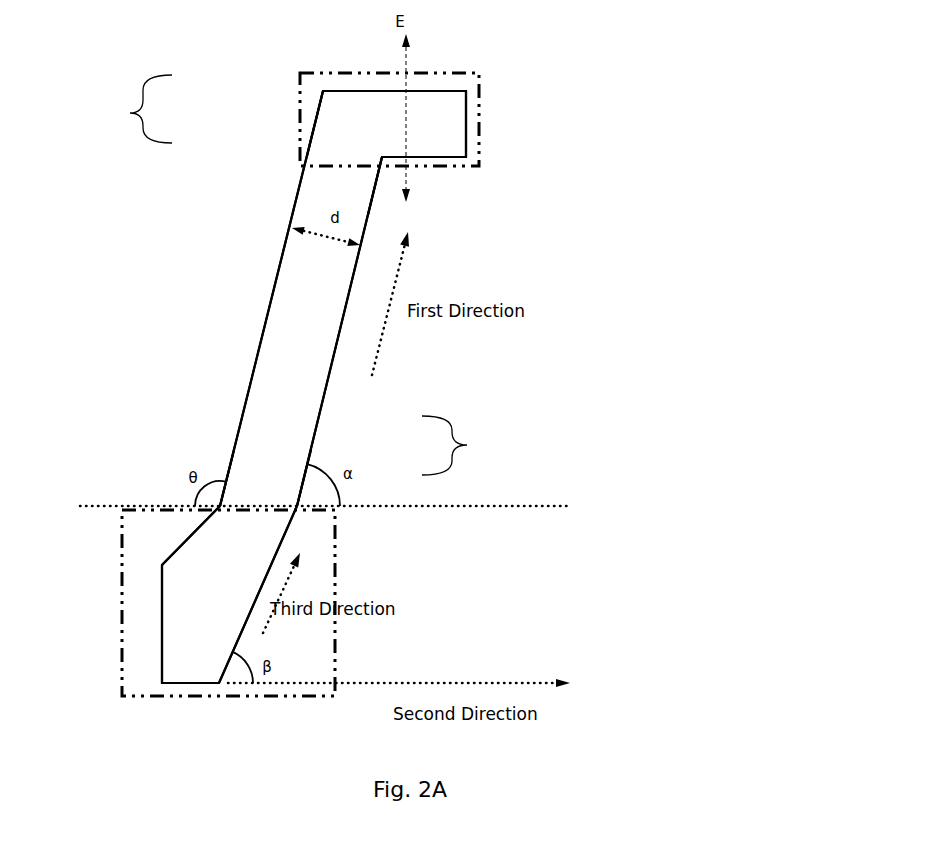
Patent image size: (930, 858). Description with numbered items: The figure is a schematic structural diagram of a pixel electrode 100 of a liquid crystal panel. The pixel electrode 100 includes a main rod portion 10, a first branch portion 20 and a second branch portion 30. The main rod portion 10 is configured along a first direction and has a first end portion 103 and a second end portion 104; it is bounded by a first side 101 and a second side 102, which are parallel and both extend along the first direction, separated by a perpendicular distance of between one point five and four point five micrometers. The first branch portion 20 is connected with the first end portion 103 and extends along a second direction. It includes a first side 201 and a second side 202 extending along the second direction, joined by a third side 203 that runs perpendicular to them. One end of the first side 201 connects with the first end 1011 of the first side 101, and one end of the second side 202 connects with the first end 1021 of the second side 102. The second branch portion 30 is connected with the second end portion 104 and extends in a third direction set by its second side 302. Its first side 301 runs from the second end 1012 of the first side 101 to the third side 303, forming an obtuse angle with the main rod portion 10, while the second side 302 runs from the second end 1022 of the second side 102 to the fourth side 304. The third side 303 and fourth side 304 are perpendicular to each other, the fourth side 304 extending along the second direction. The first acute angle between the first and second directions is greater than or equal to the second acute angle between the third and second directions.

The pixel electrode 100 is at (675, 38).
The main rod portion 10 is at (142, 252).
The first branch portion 20 is at (483, 118).
The second branch portion 30 is at (335, 578).
The first side of the main rod portion 101 is at (273, 292).
The second side of the main rod portion 102 is at (330, 368).
The first end portion 103 is at (117, 109).
The second end portion 104 is at (478, 445).
The first end of the first side 1011 is at (307, 153).
The second end of the first side 1012 is at (220, 506).
The first end of the second side 1021 is at (382, 157).
The second end of the second side 1022 is at (300, 505).
The first side of the first branch portion 201 is at (425, 91).
The second side of the first branch portion 202 is at (434, 156).
The third side of the first branch portion 203 is at (468, 143).
The first side of the second branch portion 301 is at (197, 529).
The second side of the second branch portion 302 is at (240, 638).
The third side of the second branch portion 303 is at (161, 642).
The fourth side of the second branch portion 304 is at (192, 683).